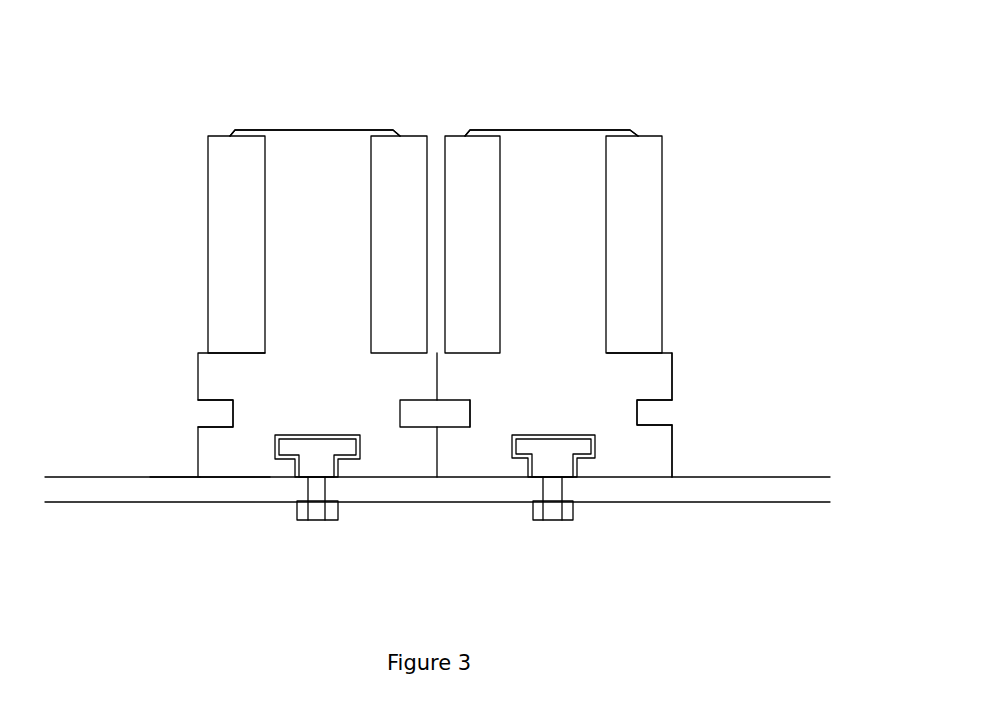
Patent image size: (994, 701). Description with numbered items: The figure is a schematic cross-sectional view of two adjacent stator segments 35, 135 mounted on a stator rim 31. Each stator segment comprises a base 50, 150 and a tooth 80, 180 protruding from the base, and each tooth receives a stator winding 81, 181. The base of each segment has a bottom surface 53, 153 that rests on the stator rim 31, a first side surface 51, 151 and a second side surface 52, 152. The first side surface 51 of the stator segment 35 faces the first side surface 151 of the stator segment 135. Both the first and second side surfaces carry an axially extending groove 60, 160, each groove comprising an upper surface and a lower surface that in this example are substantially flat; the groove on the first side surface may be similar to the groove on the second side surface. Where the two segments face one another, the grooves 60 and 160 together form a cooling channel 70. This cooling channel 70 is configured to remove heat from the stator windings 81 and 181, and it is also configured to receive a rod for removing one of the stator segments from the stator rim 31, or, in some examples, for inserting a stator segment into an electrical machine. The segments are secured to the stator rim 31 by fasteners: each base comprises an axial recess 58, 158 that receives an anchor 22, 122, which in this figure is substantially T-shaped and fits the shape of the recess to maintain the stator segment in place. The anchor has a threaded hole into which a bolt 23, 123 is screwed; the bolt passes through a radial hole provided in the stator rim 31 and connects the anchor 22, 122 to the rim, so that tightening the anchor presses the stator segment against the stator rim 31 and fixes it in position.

The stator segment 35 is at (240, 92).
The tooth 80 is at (303, 163).
The stator winding 81 is at (222, 178).
The tooth 180 is at (535, 158).
The stator winding 181 is at (643, 181).
The stator segment 135 is at (592, 96).
The axial recess 158 is at (557, 433).
The base 150 is at (640, 366).
The second side surface 152 is at (672, 378).
The axially extending groove 160 is at (640, 413).
The bottom surface 153 is at (628, 476).
The axial recess 58 is at (282, 457).
The base 50 is at (225, 364).
The axially extending groove 60 is at (217, 422).
The second side surface 52 is at (185, 470).
The bottom surface 53 is at (240, 473).
The anchor 22 is at (277, 453).
The bolt 23 is at (303, 520).
The first side surface 51 is at (437, 390).
The first side surface 151 is at (435, 458).
The cooling channel 70 is at (476, 448).
The anchor 122 is at (577, 464).
The bolt 123 is at (575, 519).
The stator rim 31 is at (752, 488).